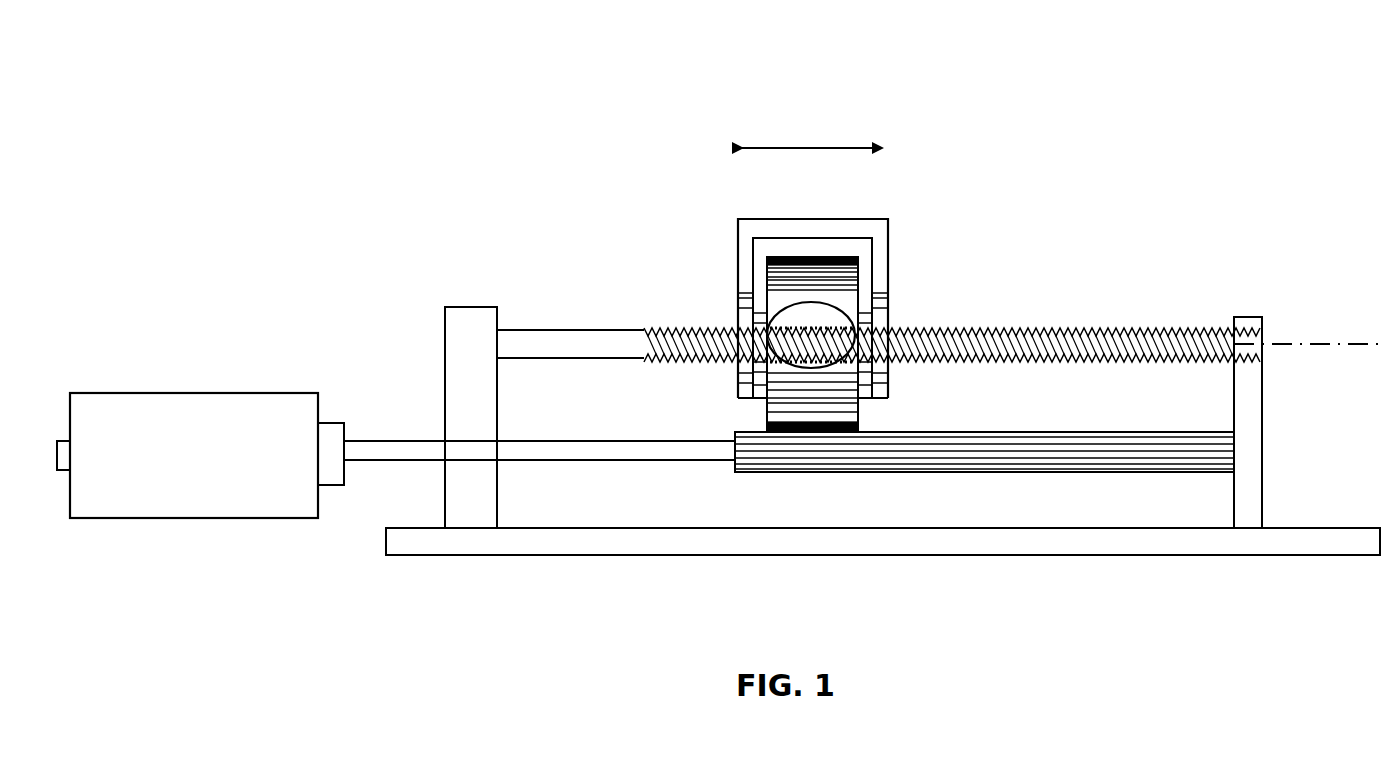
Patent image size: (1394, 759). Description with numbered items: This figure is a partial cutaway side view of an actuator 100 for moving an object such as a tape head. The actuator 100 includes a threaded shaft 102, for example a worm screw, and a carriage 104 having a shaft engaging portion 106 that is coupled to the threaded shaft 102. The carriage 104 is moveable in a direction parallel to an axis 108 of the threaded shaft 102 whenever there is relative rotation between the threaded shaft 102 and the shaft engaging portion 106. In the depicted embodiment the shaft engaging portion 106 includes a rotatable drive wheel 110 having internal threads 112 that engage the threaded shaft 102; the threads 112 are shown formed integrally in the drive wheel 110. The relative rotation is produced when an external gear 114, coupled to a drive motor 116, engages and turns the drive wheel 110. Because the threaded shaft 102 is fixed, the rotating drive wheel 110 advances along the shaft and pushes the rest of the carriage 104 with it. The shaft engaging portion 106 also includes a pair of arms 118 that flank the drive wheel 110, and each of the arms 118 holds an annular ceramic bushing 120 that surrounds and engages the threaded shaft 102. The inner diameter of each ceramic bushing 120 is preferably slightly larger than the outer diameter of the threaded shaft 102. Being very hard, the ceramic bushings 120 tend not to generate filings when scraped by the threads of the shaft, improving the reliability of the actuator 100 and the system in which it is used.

The actuator 100 is at (345, 190).
The threaded shaft 102 is at (1148, 330).
The carriage 104 is at (847, 219).
The shaft engaging portion 106 is at (712, 374).
The axis 108 is at (1307, 343).
The rotatable drive wheel 110 is at (793, 257).
The internal threads 112 is at (828, 310).
The external gear 114 is at (990, 472).
The drive motor 116 is at (192, 519).
The arms 118 is at (740, 293).
The annular ceramic bushing 120 is at (740, 318).